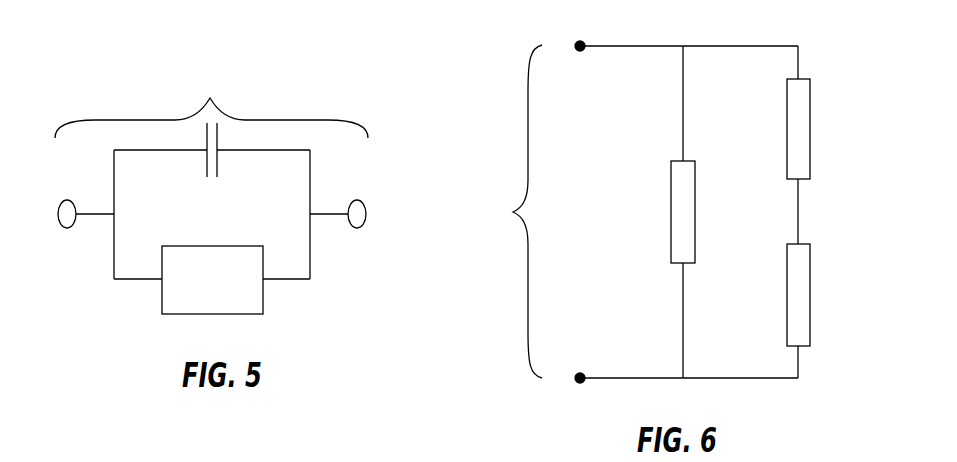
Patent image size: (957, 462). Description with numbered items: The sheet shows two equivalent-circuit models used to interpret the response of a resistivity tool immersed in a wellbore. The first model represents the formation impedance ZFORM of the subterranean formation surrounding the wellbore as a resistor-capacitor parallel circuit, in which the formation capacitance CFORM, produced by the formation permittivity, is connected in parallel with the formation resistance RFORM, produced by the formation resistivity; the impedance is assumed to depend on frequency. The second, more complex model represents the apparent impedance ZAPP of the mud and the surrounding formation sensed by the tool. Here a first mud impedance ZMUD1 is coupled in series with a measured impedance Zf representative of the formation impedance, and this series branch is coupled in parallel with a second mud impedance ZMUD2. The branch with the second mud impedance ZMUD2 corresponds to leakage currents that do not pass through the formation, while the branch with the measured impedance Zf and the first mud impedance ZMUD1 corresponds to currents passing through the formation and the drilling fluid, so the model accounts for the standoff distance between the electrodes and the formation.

In FIG. 5, the formation impedance ZFORM is at (211, 99).
In FIG. 5, the formation capacitance CFORM is at (212, 178).
In FIG. 5, the formation resistance RFORM is at (212, 280).
In FIG. 6, the apparent impedance ZAPP is at (501, 211).
In FIG. 6, the first mud impedance ZMUD1 is at (832, 129).
In FIG. 6, the second mud impedance ZMUD2 is at (717, 212).
In FIG. 6, the measured impedance Zf is at (812, 295).